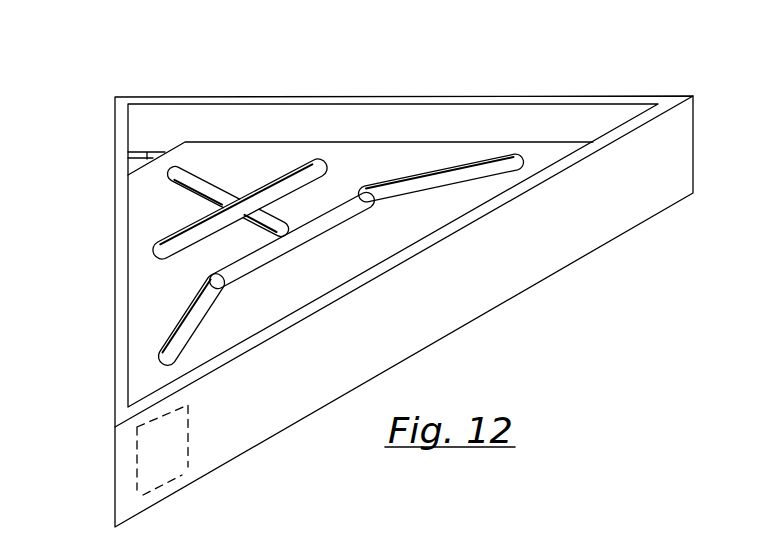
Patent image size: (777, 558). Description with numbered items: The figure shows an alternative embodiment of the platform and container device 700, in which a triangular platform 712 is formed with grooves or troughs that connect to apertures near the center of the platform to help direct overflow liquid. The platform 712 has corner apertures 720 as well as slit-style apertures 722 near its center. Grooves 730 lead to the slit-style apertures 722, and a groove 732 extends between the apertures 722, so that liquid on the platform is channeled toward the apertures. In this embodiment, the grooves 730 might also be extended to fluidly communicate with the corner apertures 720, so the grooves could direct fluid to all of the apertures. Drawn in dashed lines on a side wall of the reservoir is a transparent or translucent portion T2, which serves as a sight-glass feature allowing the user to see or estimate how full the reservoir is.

The device 700 is at (526, 64).
The platform 712 is at (383, 251).
The corner apertures 720 is at (142, 158).
The slit-style apertures 722 is at (350, 202).
The grooves 730 is at (463, 175).
The groove 732 is at (262, 226).
The transparent or translucent portion T2 is at (188, 440).